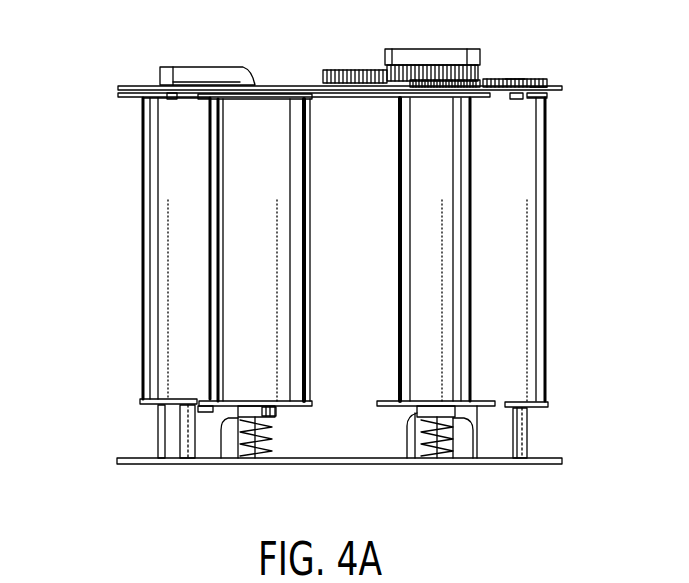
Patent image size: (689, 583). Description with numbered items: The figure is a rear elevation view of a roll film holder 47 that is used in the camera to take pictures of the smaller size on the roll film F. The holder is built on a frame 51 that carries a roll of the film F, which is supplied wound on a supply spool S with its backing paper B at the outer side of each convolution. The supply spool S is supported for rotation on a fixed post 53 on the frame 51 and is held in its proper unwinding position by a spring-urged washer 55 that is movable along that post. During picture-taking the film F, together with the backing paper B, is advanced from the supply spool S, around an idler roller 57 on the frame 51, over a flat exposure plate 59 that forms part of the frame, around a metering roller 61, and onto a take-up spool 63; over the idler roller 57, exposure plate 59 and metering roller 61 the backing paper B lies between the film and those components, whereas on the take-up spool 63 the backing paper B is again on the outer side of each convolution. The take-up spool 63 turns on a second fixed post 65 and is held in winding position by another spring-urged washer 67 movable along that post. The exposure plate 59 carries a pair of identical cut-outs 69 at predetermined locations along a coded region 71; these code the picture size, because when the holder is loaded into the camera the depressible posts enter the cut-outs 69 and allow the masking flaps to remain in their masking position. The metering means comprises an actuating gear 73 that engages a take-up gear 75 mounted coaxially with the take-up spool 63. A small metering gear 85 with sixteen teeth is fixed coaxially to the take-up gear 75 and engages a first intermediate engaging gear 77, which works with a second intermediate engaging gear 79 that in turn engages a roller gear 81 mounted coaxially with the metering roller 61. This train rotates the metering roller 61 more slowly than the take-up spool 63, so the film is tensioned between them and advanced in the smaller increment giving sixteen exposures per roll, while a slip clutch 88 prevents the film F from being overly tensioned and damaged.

The roll film holder 47 is at (134, 64).
The frame 51 is at (118, 91).
The fixed post 53 is at (253, 462).
The spring-urged washer 55 is at (277, 413).
The idler roller 57 is at (147, 404).
The exposure plate 59 is at (366, 300).
The metering roller 61 is at (533, 407).
The take-up spool 63 is at (492, 407).
The fixed post 65 is at (433, 457).
The spring-urged washer 67 is at (407, 455).
The cut-outs 69 is at (232, 440).
The coded region 71 is at (342, 446).
The actuating gear 73 is at (325, 75).
The take-up gear 75 is at (455, 66).
The intermediate engaging gear 77 is at (484, 79).
The intermediate engaging gear 79 is at (512, 79).
The roller gear 81 is at (548, 82).
The metering gear 85 is at (430, 96).
The slip clutch 88 is at (410, 56).
The supply spool S is at (208, 408).
The backing paper B is at (232, 245).
The roll film F is at (172, 218).